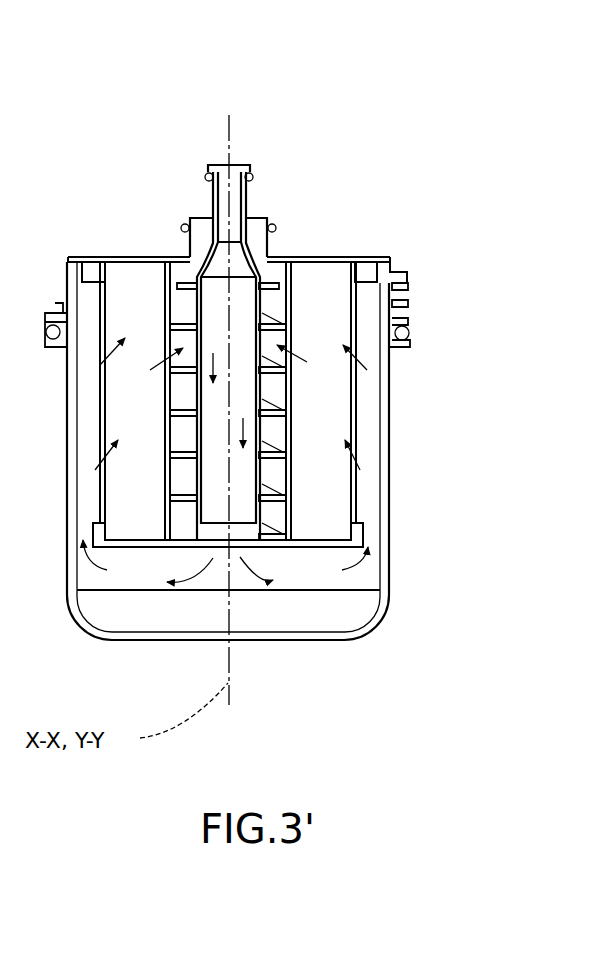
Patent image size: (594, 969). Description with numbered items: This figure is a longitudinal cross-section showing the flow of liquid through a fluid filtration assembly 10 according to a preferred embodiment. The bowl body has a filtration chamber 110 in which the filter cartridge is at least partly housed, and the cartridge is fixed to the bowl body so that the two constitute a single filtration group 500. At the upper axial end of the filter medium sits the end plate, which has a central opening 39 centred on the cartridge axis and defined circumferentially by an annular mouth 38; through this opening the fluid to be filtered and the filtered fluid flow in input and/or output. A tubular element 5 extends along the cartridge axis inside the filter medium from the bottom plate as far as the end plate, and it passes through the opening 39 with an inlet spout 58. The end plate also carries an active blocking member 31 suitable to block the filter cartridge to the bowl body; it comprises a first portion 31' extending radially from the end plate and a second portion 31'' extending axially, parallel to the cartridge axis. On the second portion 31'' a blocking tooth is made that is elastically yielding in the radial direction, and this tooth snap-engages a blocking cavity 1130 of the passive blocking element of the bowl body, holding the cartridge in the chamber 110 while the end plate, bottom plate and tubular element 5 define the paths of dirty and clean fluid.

The filtration group 500 is at (78, 182).
The annular mouth 38 is at (183, 236).
The opening 39 is at (200, 205).
The inlet spout 58 is at (243, 197).
The tubular element 5 is at (268, 291).
The active blocking member 31 is at (268, 205).
The first portion 31' is at (456, 236).
The second portion 31'' is at (476, 313).
The blocking cavity 1130 is at (407, 334).
The fluid filtration assembly 10 is at (430, 505).
The filtration chamber 110 is at (340, 608).